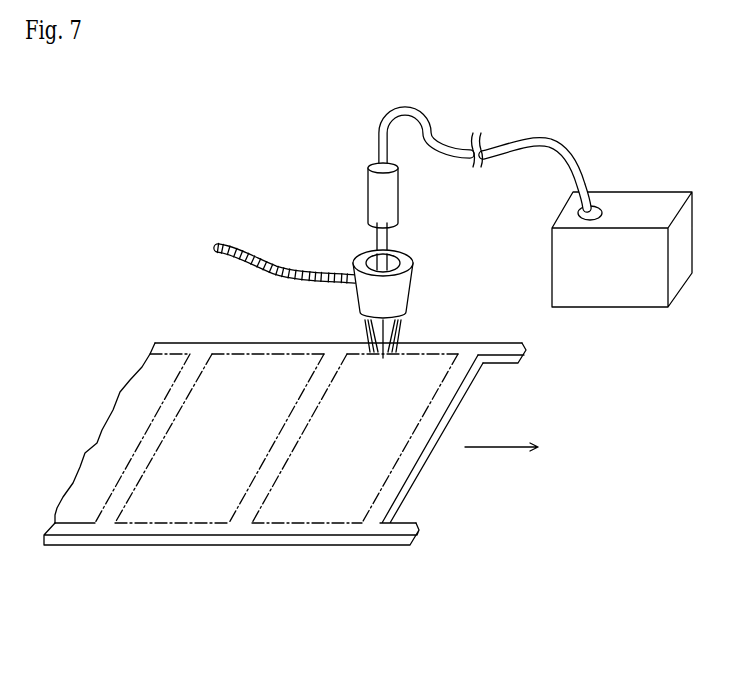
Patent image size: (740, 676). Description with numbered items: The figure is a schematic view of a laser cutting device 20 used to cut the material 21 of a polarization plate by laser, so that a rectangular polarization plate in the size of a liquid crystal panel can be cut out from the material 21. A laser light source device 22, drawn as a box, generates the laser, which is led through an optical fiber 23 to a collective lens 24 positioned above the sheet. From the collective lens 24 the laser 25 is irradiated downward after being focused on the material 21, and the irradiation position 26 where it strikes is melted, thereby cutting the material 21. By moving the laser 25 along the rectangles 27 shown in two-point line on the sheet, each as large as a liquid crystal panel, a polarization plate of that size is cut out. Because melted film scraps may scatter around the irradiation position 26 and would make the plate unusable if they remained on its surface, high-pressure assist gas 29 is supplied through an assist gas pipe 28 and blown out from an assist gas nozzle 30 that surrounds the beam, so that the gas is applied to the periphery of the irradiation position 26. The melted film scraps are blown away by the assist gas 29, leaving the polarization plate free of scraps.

The laser cutting device 20 is at (259, 644).
The material 21 is at (218, 545).
The laser light source device 22 is at (628, 192).
The optical fiber 23 is at (538, 141).
The collective lens 24 is at (399, 192).
The laser 25 is at (388, 243).
The irradiation position 26 is at (383, 358).
The rectangles 27 is at (170, 427).
The assist gas pipe 28 is at (278, 263).
The assist gas 29 is at (364, 322).
The assist gas nozzle 30 is at (412, 288).